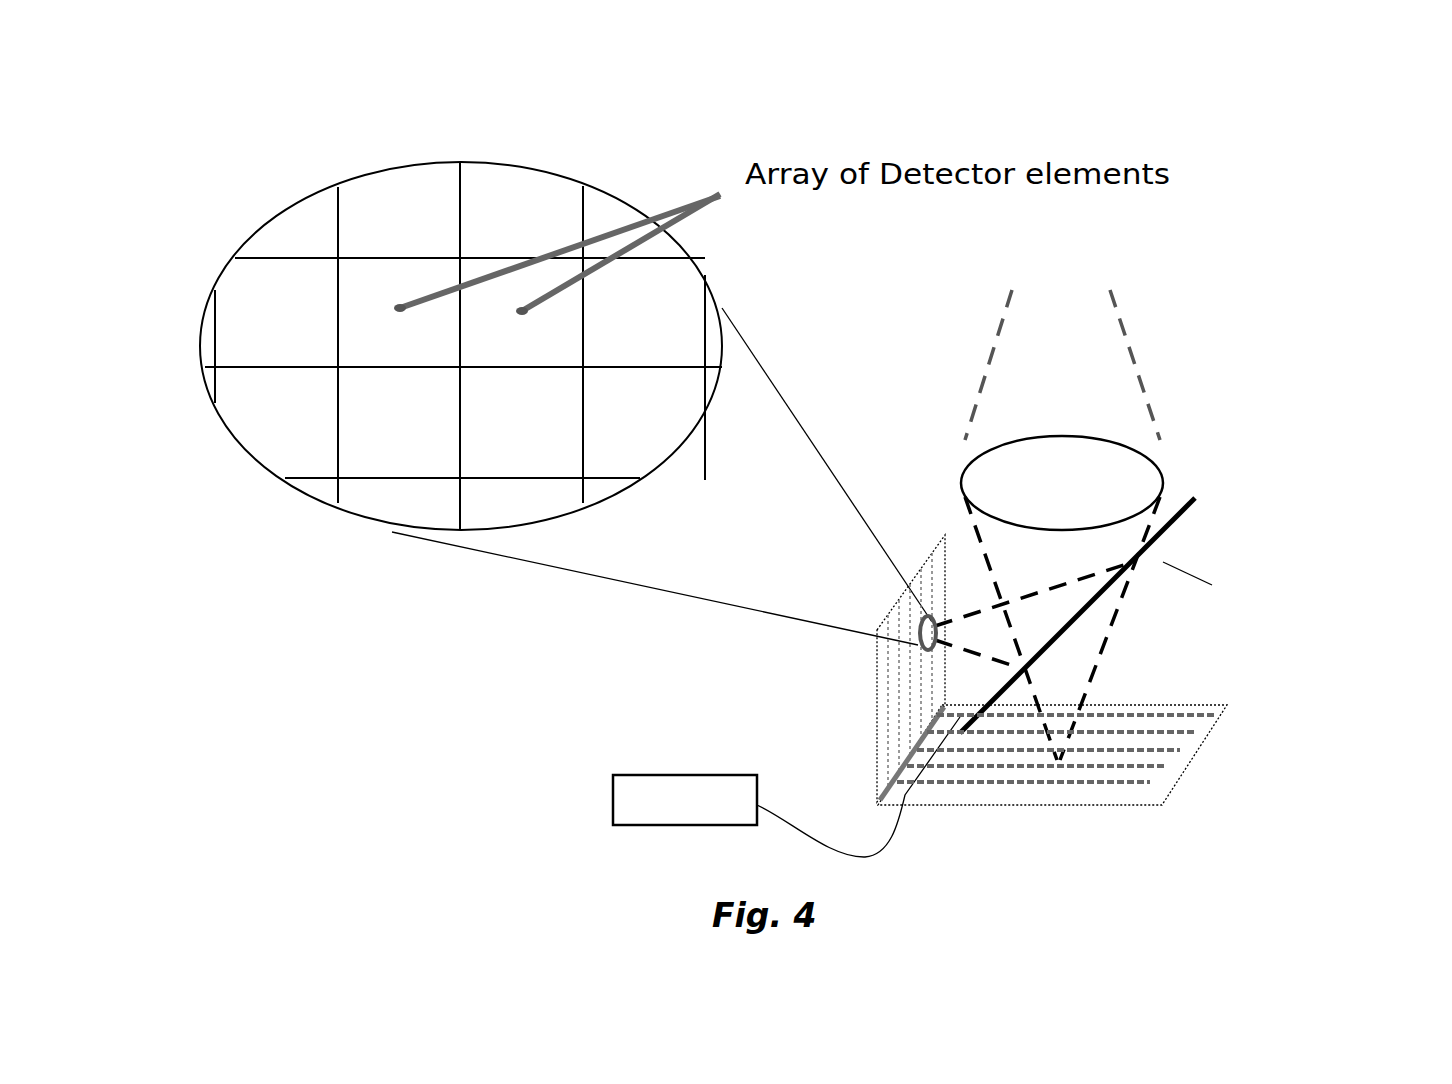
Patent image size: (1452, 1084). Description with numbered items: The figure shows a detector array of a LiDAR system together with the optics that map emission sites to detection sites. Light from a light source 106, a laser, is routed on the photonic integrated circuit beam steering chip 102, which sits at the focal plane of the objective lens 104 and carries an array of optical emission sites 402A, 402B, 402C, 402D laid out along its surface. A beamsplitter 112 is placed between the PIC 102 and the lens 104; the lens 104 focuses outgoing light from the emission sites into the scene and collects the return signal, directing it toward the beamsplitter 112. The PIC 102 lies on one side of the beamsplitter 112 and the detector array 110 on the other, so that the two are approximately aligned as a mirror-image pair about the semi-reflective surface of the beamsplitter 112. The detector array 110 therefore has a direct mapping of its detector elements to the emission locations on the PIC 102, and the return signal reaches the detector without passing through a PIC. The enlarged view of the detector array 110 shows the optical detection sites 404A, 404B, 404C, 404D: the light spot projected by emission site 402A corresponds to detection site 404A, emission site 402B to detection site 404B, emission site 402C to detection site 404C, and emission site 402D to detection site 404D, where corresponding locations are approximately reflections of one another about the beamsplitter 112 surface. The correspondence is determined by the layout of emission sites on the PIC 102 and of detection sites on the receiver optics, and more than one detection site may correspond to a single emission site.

The photonic integrated circuit (PIC) beam steering chip 102 is at (1213, 765).
The objective lens 104 is at (1160, 485).
The light source 106 is at (593, 803).
The detector array 110 is at (862, 692).
The beamsplitter 112 is at (1202, 520).
The optical emission site 402A is at (1133, 765).
The optical emission site 402B is at (1112, 765).
The optical emission site 402C is at (1100, 775).
The optical emission site 402D is at (1077, 767).
The optical detection site 404A is at (240, 293).
The optical detection site 404B is at (399, 296).
The optical detection site 404C is at (508, 294).
The optical detection site 404D is at (680, 316).